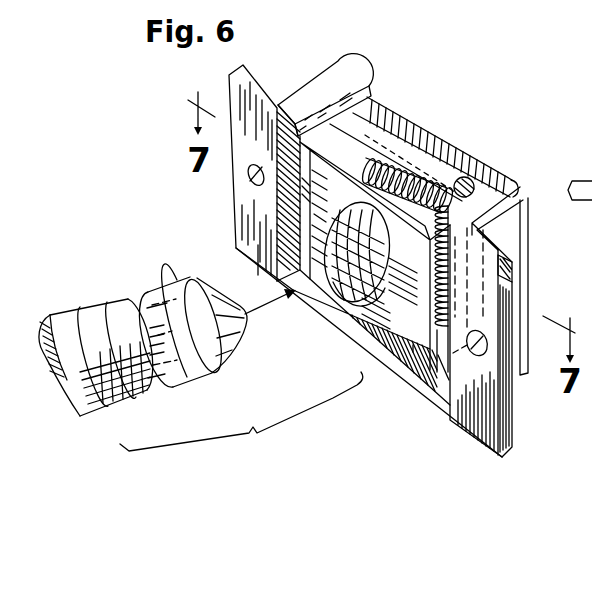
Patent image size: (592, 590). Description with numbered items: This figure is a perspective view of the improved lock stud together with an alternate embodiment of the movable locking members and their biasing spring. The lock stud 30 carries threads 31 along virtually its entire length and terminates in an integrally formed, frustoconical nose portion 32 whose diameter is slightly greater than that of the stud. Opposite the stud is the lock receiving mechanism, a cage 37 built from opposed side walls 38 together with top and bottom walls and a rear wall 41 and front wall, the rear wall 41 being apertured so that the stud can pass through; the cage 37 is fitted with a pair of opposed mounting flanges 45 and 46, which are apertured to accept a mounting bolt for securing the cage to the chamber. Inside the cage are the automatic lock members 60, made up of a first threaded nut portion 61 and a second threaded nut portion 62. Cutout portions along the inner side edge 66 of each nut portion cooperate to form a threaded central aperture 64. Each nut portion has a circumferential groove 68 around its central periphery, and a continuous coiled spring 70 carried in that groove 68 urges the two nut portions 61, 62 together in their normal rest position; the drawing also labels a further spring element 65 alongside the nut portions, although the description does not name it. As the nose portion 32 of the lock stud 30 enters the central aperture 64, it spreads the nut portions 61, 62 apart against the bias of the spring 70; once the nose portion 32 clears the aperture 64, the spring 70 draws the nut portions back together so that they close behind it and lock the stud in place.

The lock stud 30 is at (143, 363).
The threads 31 is at (80, 310).
The nose portion 32 is at (182, 288).
The cage 37 is at (354, 54).
The side walls 38 is at (507, 230).
The rear wall 41 is at (480, 184).
The mounting flange 45 is at (240, 187).
The mounting flange 46 is at (512, 418).
The automatic lock members 60 is at (363, 297).
The first threaded nut portion 61 is at (244, 258).
The second threaded nut portion 62 is at (413, 345).
The threaded central aperture 64 is at (333, 278).
The spring 65 is at (432, 306).
The inner side edge 66 is at (398, 128).
The circumferential groove 68 is at (368, 102).
The continuous coiled spring 70 is at (455, 190).